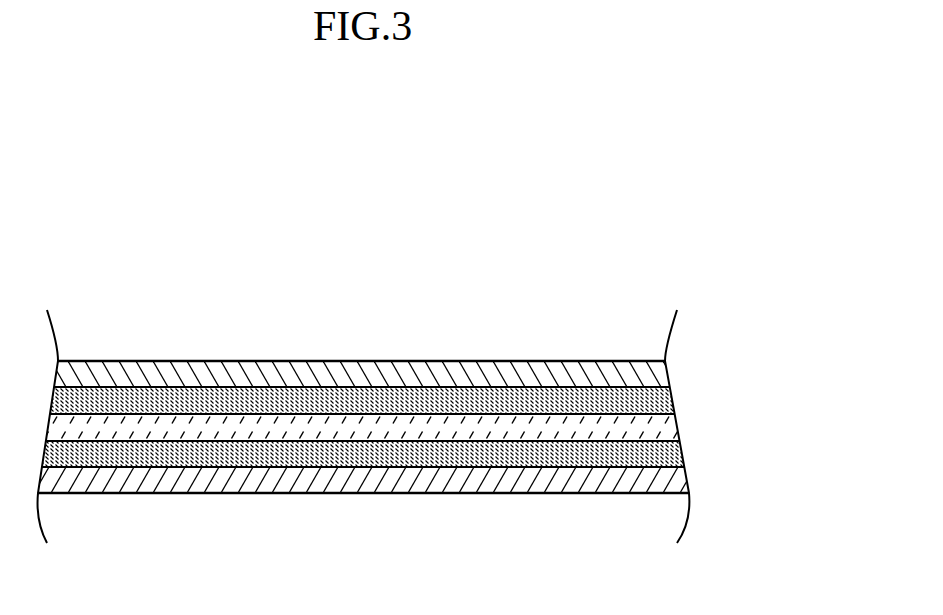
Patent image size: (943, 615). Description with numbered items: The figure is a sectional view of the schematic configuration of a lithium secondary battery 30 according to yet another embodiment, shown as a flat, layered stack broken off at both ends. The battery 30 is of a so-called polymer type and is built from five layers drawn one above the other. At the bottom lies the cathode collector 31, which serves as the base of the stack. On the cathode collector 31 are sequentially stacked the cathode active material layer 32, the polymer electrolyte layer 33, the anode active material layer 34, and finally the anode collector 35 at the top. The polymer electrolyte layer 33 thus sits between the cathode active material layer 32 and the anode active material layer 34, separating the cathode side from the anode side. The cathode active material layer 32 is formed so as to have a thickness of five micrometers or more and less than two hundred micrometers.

The lithium secondary battery 30 is at (685, 236).
The cathode collector 31 is at (683, 482).
The cathode active material layer 32 is at (677, 452).
The polymer electrolyte layer 33 is at (672, 425).
The anode active material layer 34 is at (668, 398).
The anode collector 35 is at (663, 373).